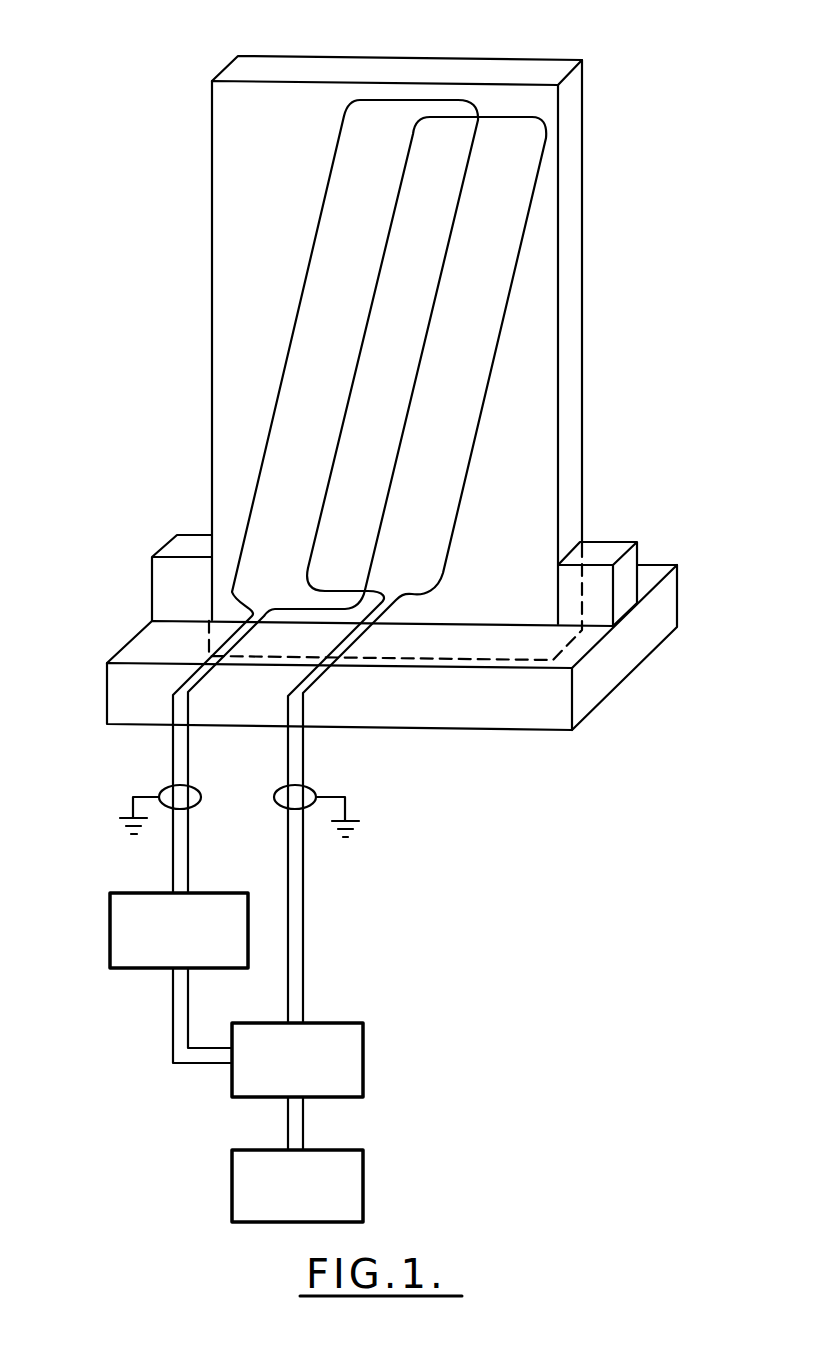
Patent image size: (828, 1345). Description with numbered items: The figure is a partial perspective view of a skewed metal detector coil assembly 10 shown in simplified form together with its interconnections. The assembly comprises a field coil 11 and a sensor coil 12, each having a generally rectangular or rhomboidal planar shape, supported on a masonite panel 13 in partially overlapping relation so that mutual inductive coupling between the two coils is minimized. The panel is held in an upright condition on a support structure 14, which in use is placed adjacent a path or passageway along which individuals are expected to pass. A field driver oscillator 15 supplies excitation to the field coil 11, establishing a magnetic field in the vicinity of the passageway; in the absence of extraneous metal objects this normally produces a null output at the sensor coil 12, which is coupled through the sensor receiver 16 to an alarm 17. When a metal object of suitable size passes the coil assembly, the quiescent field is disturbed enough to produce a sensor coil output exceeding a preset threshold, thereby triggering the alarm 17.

The metal detector coil assembly 10 is at (641, 105).
The field coil 11 is at (308, 265).
The sensor coil 12 is at (464, 488).
The masonite panel 13 is at (403, 57).
The support structure 14 is at (677, 584).
The field driver oscillator 15 is at (110, 931).
The sensor receiver 16 is at (363, 1052).
The alarm 17 is at (363, 1172).